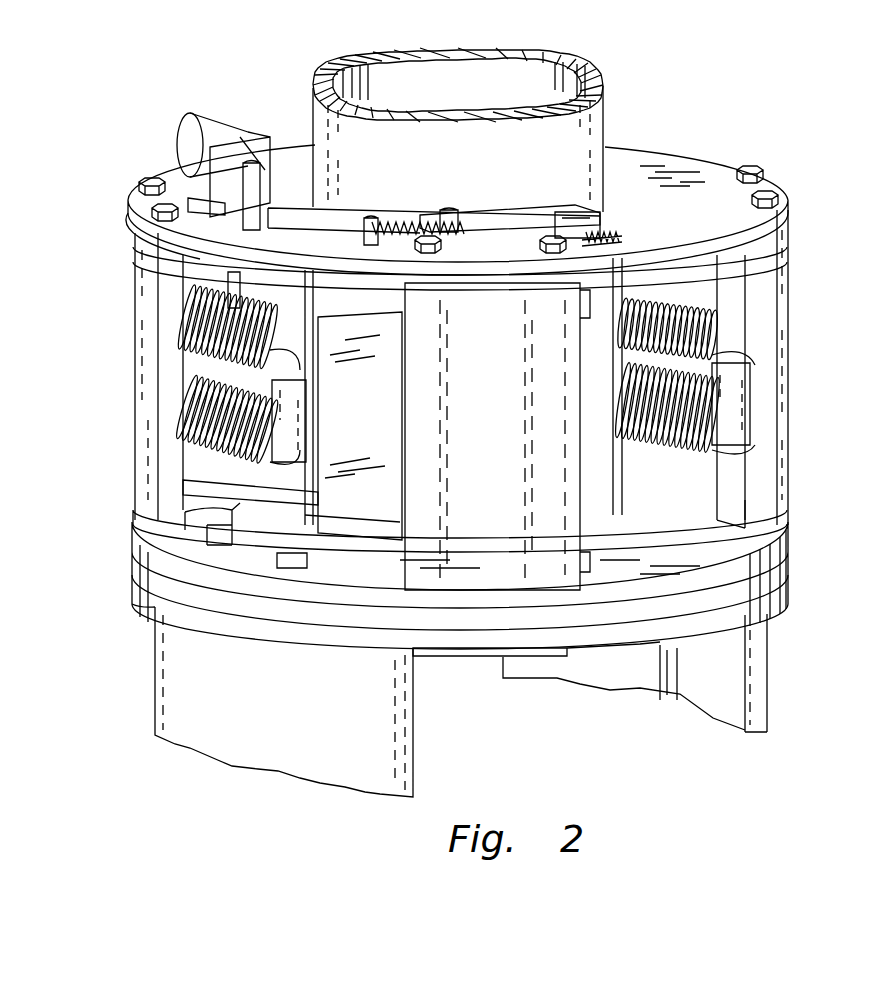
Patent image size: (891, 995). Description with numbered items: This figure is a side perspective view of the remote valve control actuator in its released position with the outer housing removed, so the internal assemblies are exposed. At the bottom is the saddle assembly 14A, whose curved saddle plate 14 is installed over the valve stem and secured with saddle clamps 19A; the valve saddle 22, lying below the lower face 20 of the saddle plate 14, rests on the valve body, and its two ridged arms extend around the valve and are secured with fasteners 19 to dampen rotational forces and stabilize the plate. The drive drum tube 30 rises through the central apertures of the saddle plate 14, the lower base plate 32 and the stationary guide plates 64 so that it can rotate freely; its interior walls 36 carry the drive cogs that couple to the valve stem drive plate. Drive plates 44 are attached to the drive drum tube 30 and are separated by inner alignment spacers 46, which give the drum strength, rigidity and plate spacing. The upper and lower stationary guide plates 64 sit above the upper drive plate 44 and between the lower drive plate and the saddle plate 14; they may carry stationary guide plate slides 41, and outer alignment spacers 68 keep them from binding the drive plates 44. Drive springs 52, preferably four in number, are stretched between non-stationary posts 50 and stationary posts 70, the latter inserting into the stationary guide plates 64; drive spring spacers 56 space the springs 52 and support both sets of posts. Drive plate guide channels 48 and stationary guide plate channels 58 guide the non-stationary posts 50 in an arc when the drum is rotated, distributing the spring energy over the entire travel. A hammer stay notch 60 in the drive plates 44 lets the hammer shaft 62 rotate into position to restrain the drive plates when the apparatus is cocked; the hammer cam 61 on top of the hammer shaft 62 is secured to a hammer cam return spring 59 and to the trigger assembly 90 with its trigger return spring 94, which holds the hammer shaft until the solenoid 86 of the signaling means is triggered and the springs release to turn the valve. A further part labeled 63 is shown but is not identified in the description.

The saddle plate 14 is at (780, 596).
The saddle assembly 14A is at (440, 775).
The fasteners 19 is at (768, 190).
The saddle clamps 19A is at (470, 655).
The lower face 20 is at (636, 650).
The valve saddle 22 is at (180, 712).
The drive drum tube 30 is at (607, 110).
The lower base plate 32 is at (155, 580).
The interior walls 36 is at (378, 72).
The stationary guide plate slides 41 is at (222, 545).
The drive plates 44 is at (706, 291).
The inner alignment spacers 46 is at (377, 417).
The drive plate guide channels 48 is at (310, 520).
The non-stationary posts 50 is at (265, 482).
The drive springs 52 is at (200, 322).
The drive spring spacers 56 is at (300, 437).
The stationary guide plate channels 58 is at (350, 576).
The hammer cam return spring 59 is at (592, 262).
The hammer stay notch 60 is at (185, 275).
The hammer cam 61 is at (580, 222).
The hammer shaft 62 is at (610, 265).
The tab 63 is at (580, 335).
The stationary guide plates 64 is at (132, 224).
The outer alignment spacers 68 is at (135, 380).
The stationary posts 70 is at (745, 520).
The solenoid 86 is at (195, 130).
The trigger assembly 90 is at (640, 152).
The trigger return spring 94 is at (400, 226).